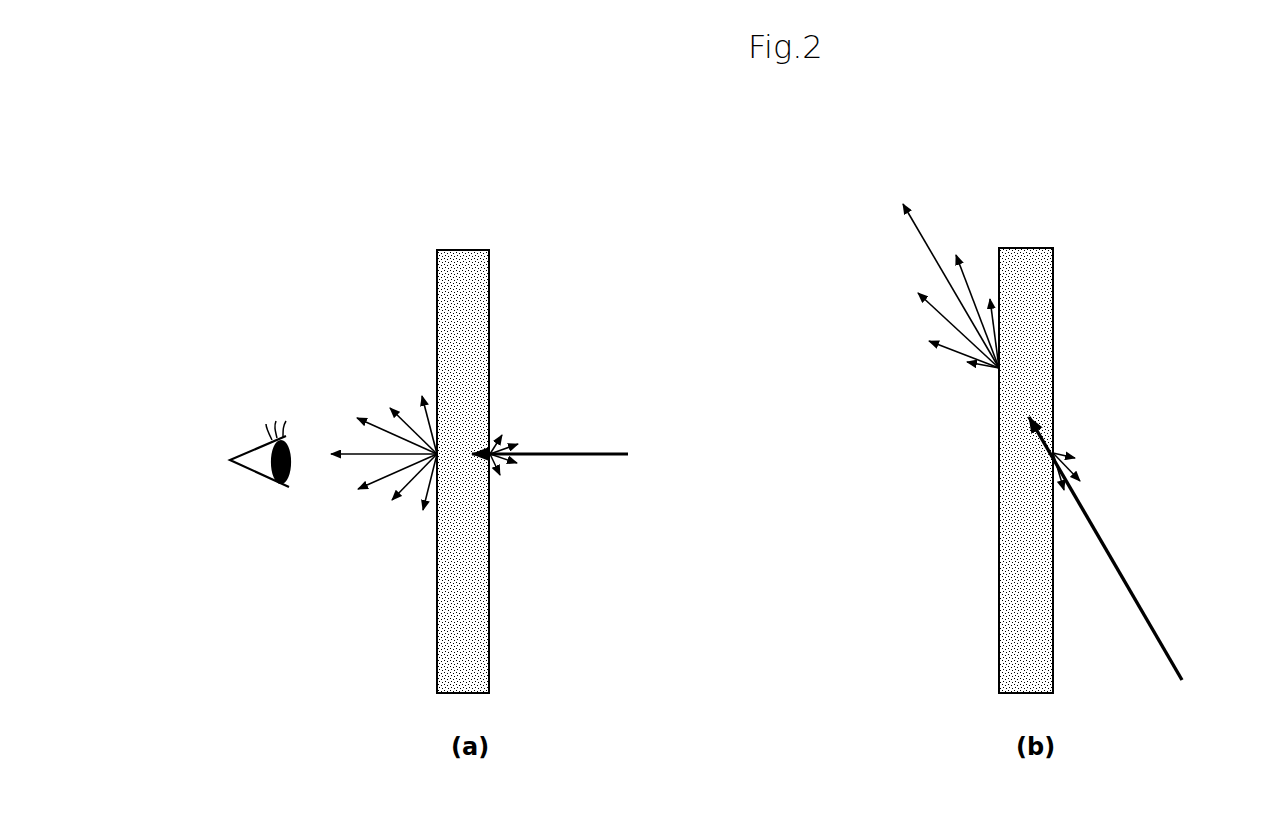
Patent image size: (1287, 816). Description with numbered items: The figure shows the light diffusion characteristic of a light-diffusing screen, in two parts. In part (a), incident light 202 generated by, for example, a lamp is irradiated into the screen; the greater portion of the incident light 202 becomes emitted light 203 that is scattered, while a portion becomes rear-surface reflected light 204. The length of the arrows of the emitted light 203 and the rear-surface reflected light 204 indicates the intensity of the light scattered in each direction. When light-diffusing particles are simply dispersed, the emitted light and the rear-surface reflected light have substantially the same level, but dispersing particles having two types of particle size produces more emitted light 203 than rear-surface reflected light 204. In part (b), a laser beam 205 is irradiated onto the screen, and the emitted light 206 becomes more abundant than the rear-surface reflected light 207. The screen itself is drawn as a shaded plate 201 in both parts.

The transparent screen / light diffusing plate 201 is at (437, 271).
The incident light 202 is at (566, 451).
The emitted light 203 is at (350, 455).
The rear-surface reflected light 204 is at (508, 434).
The laser beam 205 is at (1151, 621).
The emitted light 206 is at (930, 251).
The rear-surface reflected light 207 is at (1068, 470).